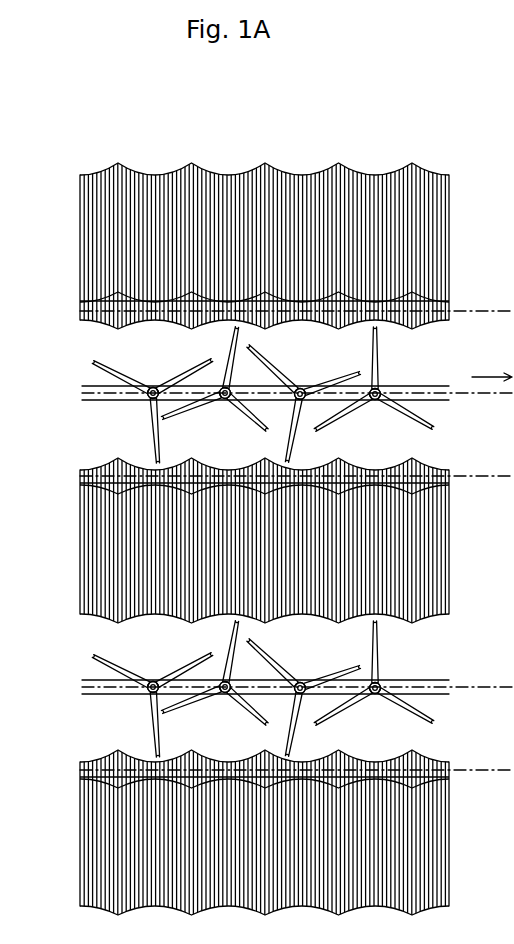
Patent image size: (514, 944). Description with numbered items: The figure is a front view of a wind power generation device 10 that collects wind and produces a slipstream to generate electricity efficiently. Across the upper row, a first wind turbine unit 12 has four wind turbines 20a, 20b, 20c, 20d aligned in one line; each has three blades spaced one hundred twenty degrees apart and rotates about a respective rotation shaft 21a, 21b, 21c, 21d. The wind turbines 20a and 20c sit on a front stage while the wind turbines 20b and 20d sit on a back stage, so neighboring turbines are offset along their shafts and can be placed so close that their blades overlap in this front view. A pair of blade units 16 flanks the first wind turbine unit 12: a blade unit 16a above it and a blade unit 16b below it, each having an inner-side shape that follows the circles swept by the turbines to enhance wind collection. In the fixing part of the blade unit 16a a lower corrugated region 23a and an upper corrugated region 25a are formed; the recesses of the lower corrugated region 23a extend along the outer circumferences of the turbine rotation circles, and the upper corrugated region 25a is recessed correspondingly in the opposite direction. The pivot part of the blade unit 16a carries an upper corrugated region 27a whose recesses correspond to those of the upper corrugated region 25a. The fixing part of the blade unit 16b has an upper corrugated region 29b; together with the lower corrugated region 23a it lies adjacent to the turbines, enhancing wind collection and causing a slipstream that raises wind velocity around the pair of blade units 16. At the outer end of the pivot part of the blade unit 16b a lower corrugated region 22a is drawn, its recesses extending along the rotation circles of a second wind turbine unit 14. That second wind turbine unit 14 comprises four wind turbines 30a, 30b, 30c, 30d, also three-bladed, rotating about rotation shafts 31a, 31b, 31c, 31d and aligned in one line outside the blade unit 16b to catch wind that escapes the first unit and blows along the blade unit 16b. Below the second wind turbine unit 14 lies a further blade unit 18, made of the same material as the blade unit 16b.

The wind power generation device 10 is at (446, 132).
The first wind turbine unit 12 is at (73, 376).
The second wind turbine unit 14 is at (73, 675).
The pair of blade units 16 is at (74, 238).
The blade unit 16a is at (92, 202).
The blade unit 16b is at (92, 592).
The blade unit 18 is at (85, 832).
The wind turbine 20a is at (152, 432).
The wind turbine 20b is at (227, 402).
The wind turbine 20c is at (273, 357).
The wind turbine 20d is at (382, 357).
The rotation shaft 21a is at (153, 387).
The rotation shaft 21b is at (222, 387).
The rotation shaft 21c is at (300, 400).
The rotation shaft 21d is at (375, 400).
The lower edge surface 22a is at (300, 606).
The lower corrugated region 23a is at (147, 318).
The upper corrugated region 25a is at (150, 300).
The upper corrugated region 27a is at (152, 168).
The upper corrugated region 29b is at (150, 463).
The wind turbine 30a is at (147, 698).
The wind turbine 30b is at (228, 700).
The wind turbine 30c is at (303, 700).
The wind turbine 30d is at (382, 680).
The rotation shaft 31a is at (153, 681).
The rotation shaft 31b is at (222, 681).
The rotation shaft 31c is at (300, 681).
The rotation shaft 31d is at (376, 700).